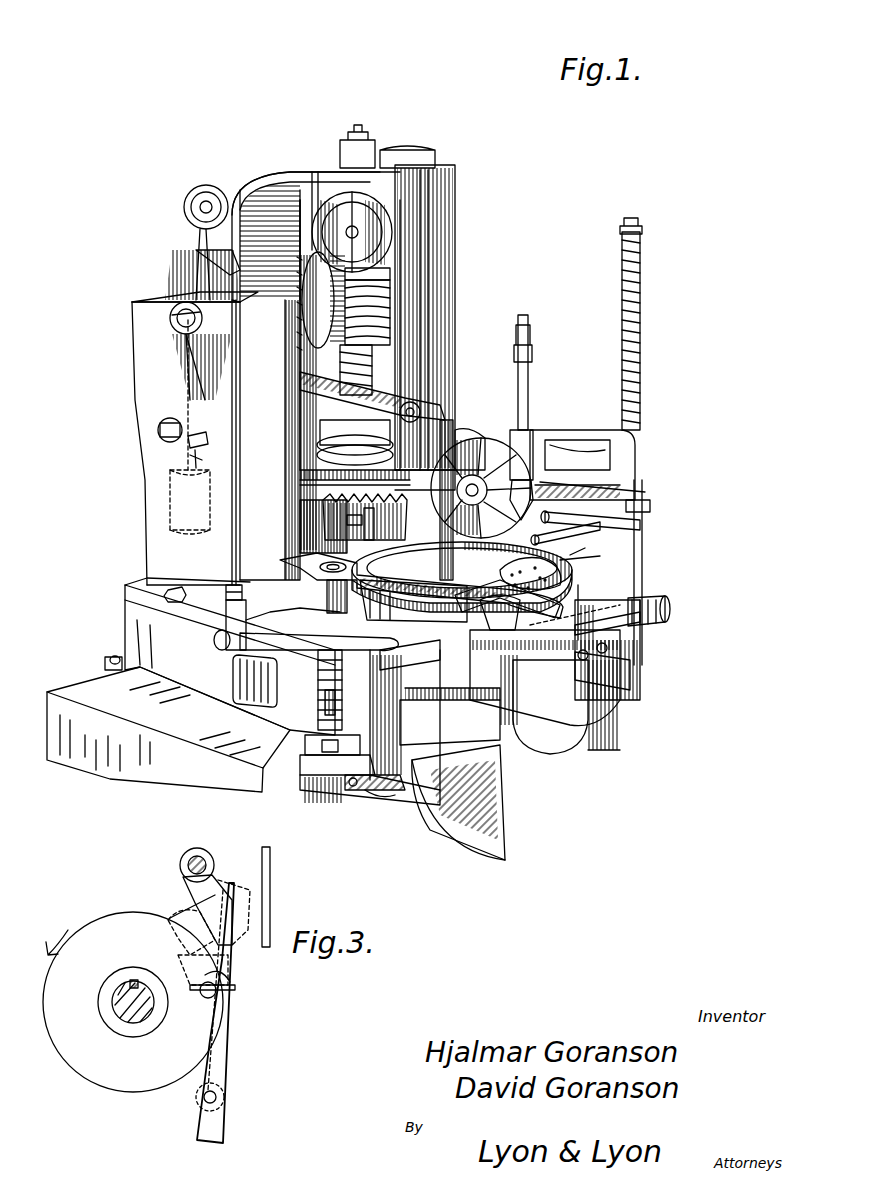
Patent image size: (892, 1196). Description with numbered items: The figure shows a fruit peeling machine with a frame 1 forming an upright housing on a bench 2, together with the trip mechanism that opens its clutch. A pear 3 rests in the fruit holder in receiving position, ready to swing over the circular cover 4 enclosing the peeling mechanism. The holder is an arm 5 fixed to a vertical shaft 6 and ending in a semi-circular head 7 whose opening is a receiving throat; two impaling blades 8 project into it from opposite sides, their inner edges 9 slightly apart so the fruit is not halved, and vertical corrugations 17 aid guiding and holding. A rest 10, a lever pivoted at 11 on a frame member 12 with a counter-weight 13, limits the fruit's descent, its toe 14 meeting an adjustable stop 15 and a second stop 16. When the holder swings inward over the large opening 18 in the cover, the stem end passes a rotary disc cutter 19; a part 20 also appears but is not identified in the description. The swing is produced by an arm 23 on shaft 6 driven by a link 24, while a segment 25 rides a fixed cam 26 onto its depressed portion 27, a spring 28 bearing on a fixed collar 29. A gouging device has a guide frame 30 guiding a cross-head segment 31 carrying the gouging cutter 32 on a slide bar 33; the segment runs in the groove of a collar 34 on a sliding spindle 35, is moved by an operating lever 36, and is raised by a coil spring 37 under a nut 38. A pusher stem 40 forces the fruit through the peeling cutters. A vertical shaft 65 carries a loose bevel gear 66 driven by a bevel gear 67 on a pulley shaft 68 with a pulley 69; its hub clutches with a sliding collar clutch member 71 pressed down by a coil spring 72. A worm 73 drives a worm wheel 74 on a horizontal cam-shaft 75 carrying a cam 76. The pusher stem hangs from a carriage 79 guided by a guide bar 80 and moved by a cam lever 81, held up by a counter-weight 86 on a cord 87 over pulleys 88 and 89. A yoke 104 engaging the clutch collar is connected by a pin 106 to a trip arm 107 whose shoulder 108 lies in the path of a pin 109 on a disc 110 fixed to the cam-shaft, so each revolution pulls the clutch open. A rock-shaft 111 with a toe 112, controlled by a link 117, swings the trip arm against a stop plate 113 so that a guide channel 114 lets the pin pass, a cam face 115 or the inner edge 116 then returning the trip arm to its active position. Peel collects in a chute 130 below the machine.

In FIG. 1, the frame 1 is at (138, 372).
In FIG. 1, the table or bench 2 is at (72, 690).
In FIG. 1, the pear 3 is at (560, 570).
In FIG. 1, the circular housing or cover 4 is at (560, 560).
In FIG. 1, the arm 5 is at (432, 596).
In FIG. 1, the vertical shaft 6 is at (300, 720).
In FIG. 1, the semi-circular head 7 is at (490, 610).
In FIG. 1, the impaling blades 8 is at (600, 575).
In FIG. 1, the inner edges 9 is at (535, 552).
In FIG. 1, the rest 10 is at (535, 672).
In FIG. 1, the pivot 11 is at (612, 622).
In FIG. 1, the frame member 12 is at (610, 595).
In FIG. 1, the counter-weight 13 is at (667, 606).
In FIG. 1, the toe 14 is at (588, 658).
In FIG. 1, the adjustable stop 15 is at (606, 650).
In FIG. 1, the adjustable stop 16 is at (618, 695).
In FIG. 1, the vertical parallel corrugations 17 is at (472, 605).
In FIG. 1, the large opening 18 is at (375, 540).
In FIG. 1, the rotary disc cutter 19 is at (591, 610).
In FIG. 1, the hopper 20 is at (545, 640).
In FIG. 1, the arm 23 is at (360, 800).
In FIG. 1, the link 24 is at (375, 800).
In FIG. 1, the segment 25 is at (283, 565).
In FIG. 1, the cam 26 is at (228, 598).
In FIG. 1, the depressed portion 27 is at (226, 622).
In FIG. 1, the spring 28 is at (318, 662).
In FIG. 1, the fixed collar 29 is at (240, 700).
In FIG. 1, the guide frame 30 is at (575, 435).
In FIG. 1, the cross-head 31 is at (620, 490).
In FIG. 1, the gouging cutter 32 is at (534, 440).
In FIG. 1, the vertical slide bar 33 is at (640, 500).
In FIG. 1, the collar 34 is at (470, 430).
In FIG. 1, the sliding spindle 35 is at (530, 358).
In FIG. 1, the operating lever 36 is at (591, 542).
In FIG. 1, the coil spring 37 is at (630, 355).
In FIG. 1, the nut 38 is at (642, 230).
In FIG. 1, the pusher stem 40 is at (462, 430).
In FIG. 1, the vertical shaft 65 is at (362, 532).
In FIG. 1, the bevel gear 66 is at (340, 512).
In FIG. 1, the bevel gear 67 is at (405, 495).
In FIG. 1, the pulley shaft 68 is at (352, 520).
In FIG. 1, the pulley 69 is at (478, 430).
In FIG. 1, the clutch member 71 is at (320, 450).
In FIG. 1, the coil spring 72 is at (330, 360).
In FIG. 1, the worm 73 is at (402, 288).
In FIG. 1, the worm wheel 74 is at (312, 245).
In FIG. 1, the cam-shaft 75 is at (172, 318).
In FIG. 3, the cam-shaft 75 is at (115, 1008).
In FIG. 1, the cam 76 is at (300, 285).
In FIG. 1, the carriage 79 is at (395, 352).
In FIG. 1, the guide bar 80 is at (412, 258).
In FIG. 1, the cam lever 81 is at (300, 410).
In FIG. 1, the counter-weight 86 is at (170, 493).
In FIG. 1, the cord or wire 87 is at (237, 190).
In FIG. 1, the pulley 88 is at (204, 190).
In FIG. 1, the pulley 89 is at (385, 230).
In FIG. 1, the yoke 104 is at (285, 412).
In FIG. 3, the pin 106 is at (216, 1097).
In FIG. 3, the trip arm 107 is at (222, 1060).
In FIG. 3, the shoulder 108 is at (232, 975).
In FIG. 3, the pin 109 is at (205, 998).
In FIG. 3, the disc 110 is at (82, 1065).
In FIG. 3, the rock-shaft 111 is at (183, 855).
In FIG. 3, the short arm or toe 112 is at (190, 896).
In FIG. 3, the fixed stop plate 113 is at (270, 875).
In FIG. 3, the guide channel 114 is at (180, 955).
In FIG. 3, the cam face 115 is at (168, 924).
In FIG. 1, the inner face or edge 116 is at (420, 690).
In FIG. 3, the inner face or edge 116 is at (222, 1020).
In FIG. 1, the link 117 is at (275, 406).
In FIG. 1, the chute 130 is at (505, 838).